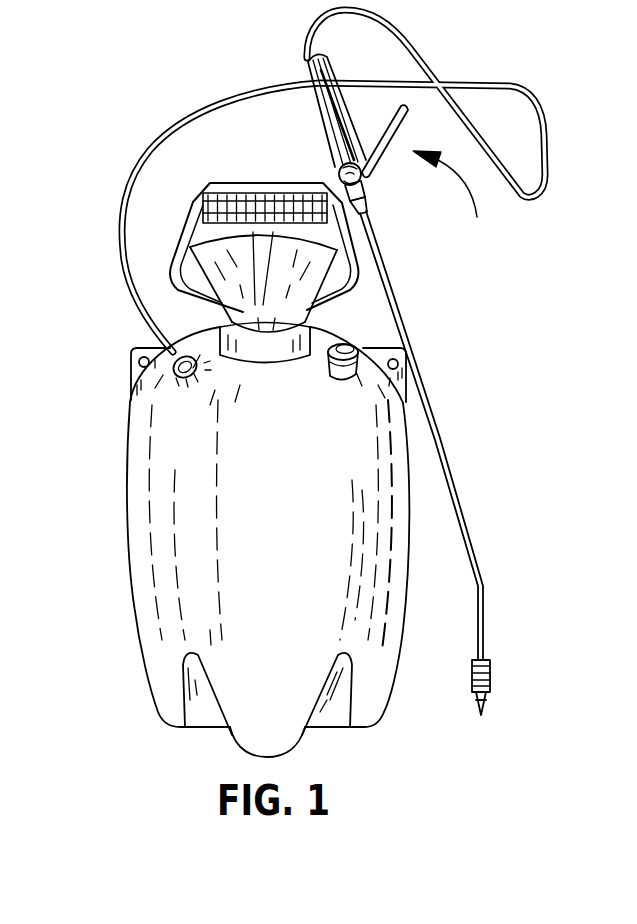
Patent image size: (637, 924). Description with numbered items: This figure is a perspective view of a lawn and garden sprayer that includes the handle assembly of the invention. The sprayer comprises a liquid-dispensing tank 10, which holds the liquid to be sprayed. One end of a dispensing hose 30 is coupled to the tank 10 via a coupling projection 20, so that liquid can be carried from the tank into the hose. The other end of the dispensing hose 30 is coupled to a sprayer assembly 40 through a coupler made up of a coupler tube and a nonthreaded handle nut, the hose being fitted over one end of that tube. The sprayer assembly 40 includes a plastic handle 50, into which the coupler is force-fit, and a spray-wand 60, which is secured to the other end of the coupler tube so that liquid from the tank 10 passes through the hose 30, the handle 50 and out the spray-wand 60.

The liquid-dispensing tank 10 is at (130, 547).
The coupling projection 20 is at (131, 393).
The dispensing hose 30 is at (190, 113).
The sprayer assembly 40 is at (437, 175).
The handle 50 is at (313, 120).
The spray-wand 60 is at (372, 208).